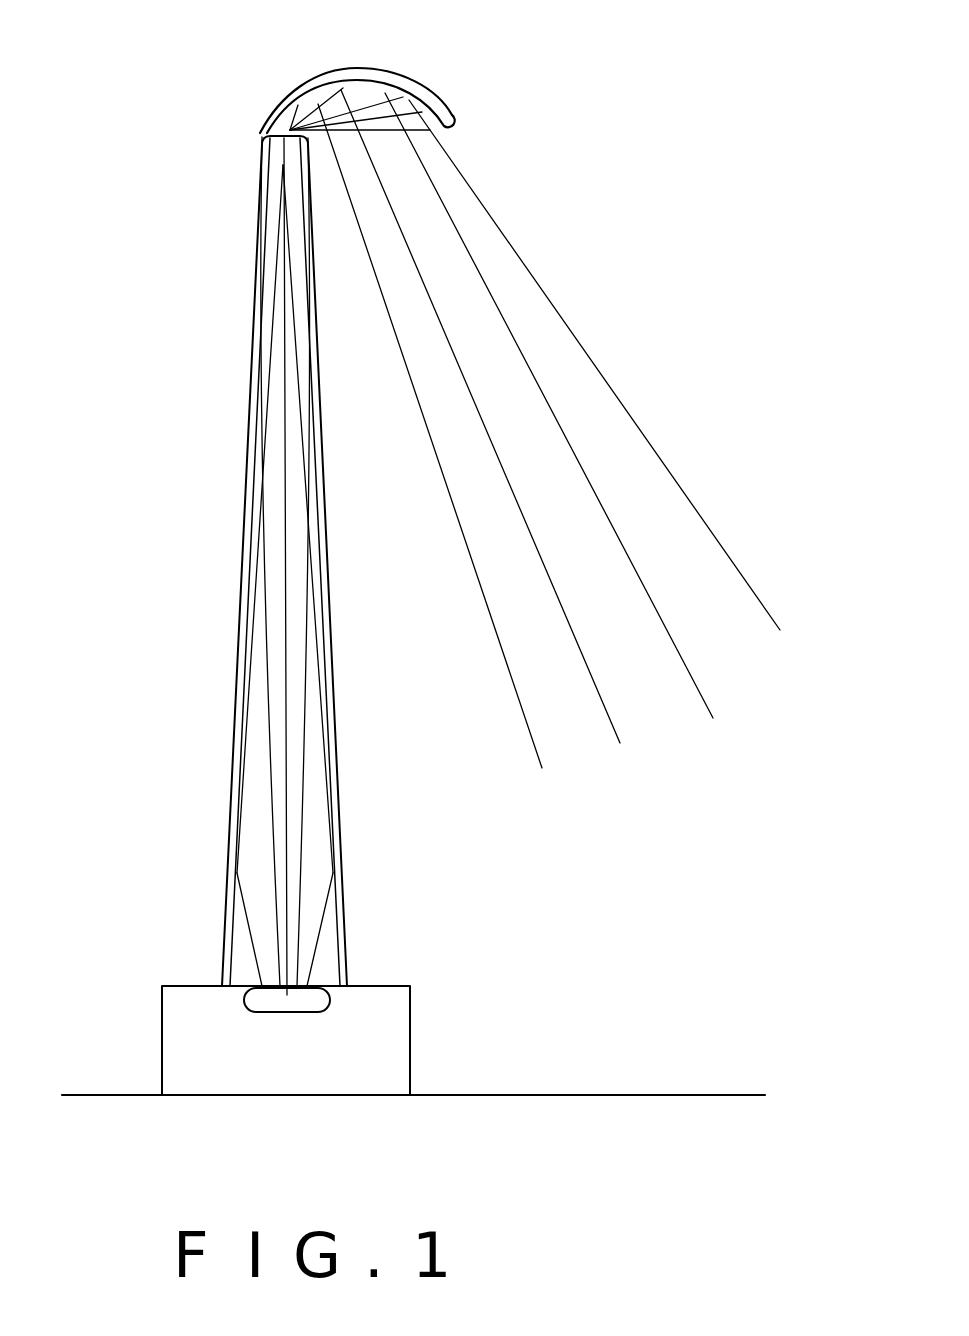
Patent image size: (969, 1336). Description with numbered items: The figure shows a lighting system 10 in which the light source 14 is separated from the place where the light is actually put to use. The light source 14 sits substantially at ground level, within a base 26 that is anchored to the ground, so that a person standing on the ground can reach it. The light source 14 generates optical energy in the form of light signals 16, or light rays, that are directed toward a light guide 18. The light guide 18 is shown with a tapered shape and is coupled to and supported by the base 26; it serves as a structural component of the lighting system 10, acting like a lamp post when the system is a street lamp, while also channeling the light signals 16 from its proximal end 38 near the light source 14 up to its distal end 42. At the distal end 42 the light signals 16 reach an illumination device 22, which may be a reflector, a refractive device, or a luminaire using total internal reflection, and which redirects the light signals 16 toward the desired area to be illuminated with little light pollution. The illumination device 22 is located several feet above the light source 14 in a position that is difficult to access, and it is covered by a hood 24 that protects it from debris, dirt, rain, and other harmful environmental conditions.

The lighting system 10 is at (152, 326).
The light source 14 is at (330, 1008).
The light signals 16 is at (665, 465).
The light guide 18 is at (240, 585).
The illumination device 22 is at (452, 127).
The hood 24 is at (374, 70).
The base 26 is at (188, 1049).
The proximal end 38 is at (320, 966).
The distal end 42 is at (283, 155).